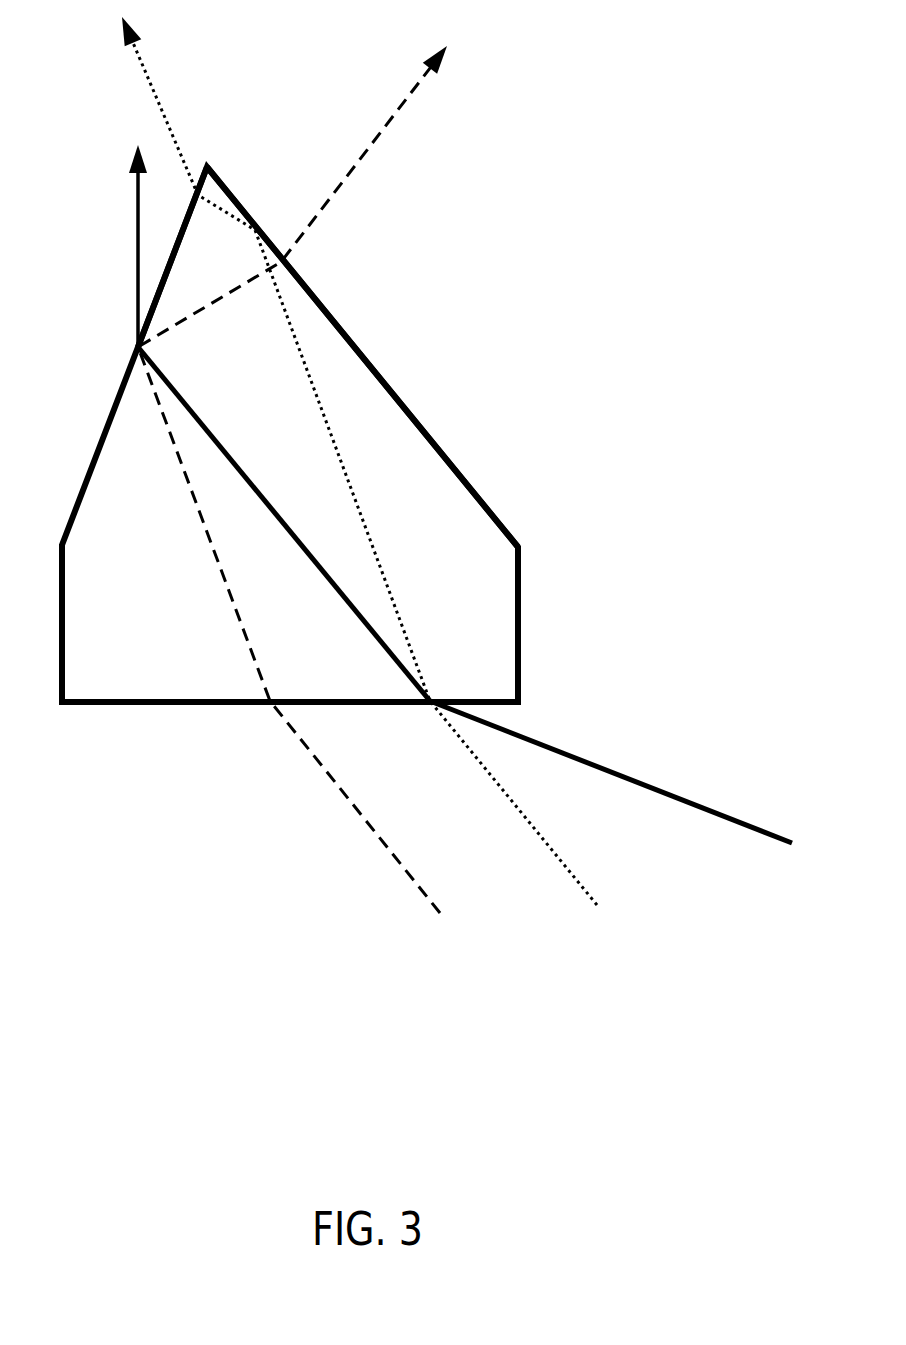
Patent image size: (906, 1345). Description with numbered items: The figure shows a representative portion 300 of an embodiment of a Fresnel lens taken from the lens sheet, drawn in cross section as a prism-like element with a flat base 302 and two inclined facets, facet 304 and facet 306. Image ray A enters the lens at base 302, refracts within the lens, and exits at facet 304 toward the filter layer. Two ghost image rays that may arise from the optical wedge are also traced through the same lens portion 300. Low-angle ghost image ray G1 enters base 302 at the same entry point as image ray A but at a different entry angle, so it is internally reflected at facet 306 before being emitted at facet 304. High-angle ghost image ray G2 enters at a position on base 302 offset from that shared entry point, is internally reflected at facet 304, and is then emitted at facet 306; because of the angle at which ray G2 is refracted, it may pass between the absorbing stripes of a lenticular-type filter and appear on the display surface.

The Fresnel lens portion 300 is at (508, 300).
The base 302 is at (230, 730).
The facet 304 is at (95, 402).
The facet 306 is at (453, 443).
The image ray A is at (765, 815).
The low-angle ghost image ray G1 is at (575, 905).
The high-angle ghost image ray G2 is at (383, 885).